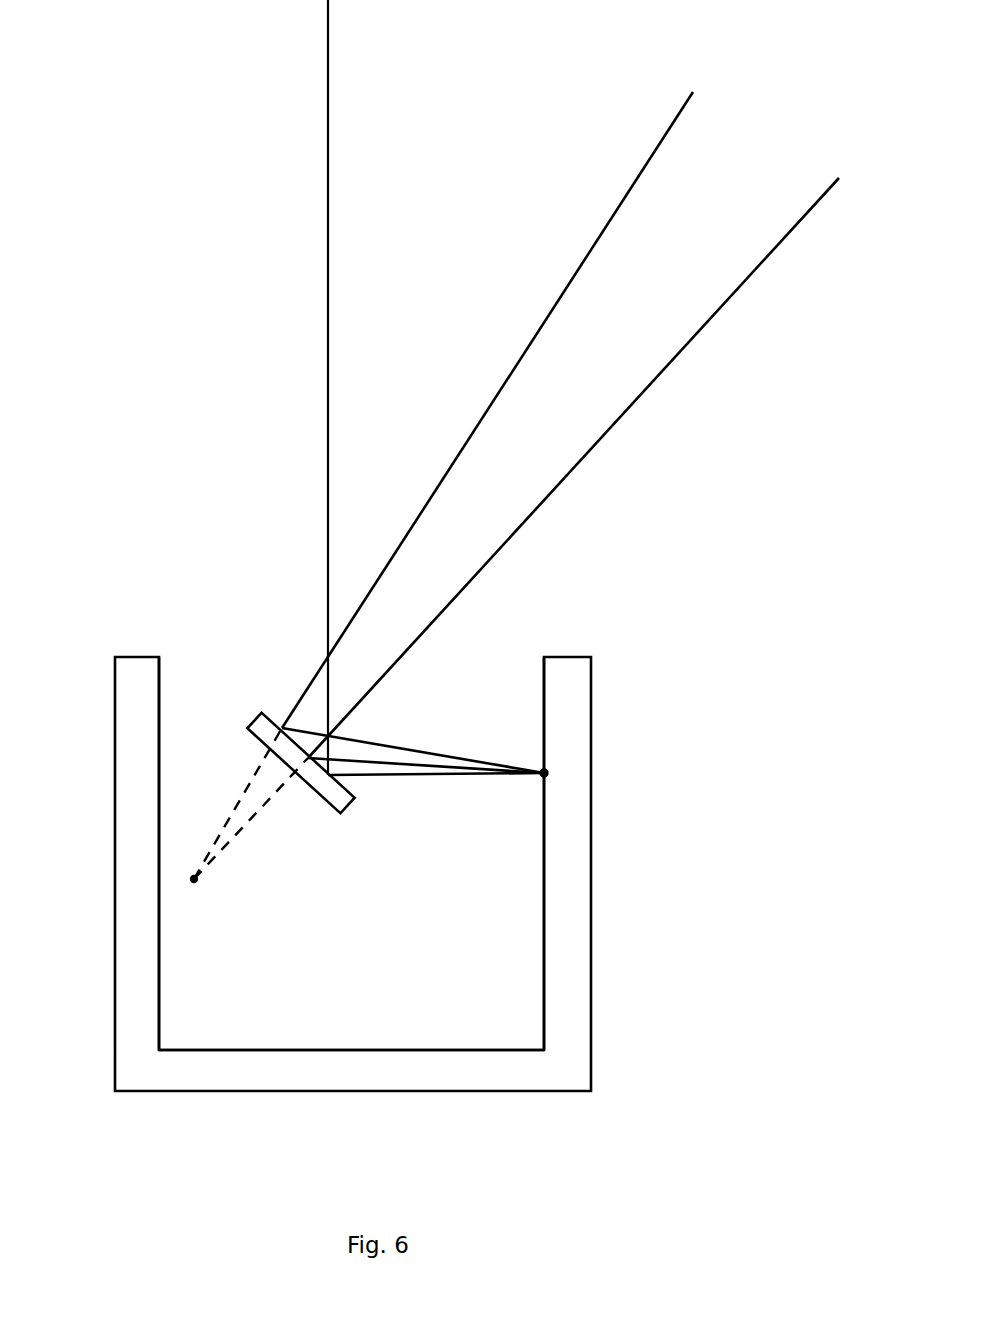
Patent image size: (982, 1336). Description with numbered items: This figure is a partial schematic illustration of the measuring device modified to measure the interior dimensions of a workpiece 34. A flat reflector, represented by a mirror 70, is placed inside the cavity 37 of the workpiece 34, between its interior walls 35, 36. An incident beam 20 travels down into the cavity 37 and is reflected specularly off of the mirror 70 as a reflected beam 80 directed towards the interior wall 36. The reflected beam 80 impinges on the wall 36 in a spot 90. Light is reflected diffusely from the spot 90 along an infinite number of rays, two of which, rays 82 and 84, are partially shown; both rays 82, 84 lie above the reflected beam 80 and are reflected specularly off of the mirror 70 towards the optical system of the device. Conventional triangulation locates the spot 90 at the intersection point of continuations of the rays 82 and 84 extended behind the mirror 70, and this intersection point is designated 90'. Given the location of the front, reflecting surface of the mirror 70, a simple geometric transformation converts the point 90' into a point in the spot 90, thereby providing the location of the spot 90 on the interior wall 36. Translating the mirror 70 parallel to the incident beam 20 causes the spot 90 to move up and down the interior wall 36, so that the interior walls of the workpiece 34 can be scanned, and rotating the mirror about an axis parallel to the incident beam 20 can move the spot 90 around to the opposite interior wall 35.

The incident beam 20 is at (336, 145).
The workpiece 34 is at (593, 978).
The interior wall 35 is at (158, 722).
The interior wall 36 is at (545, 943).
The cavity 37 is at (345, 1011).
The mirror 70 is at (252, 717).
The reflected beam 80 is at (447, 780).
The ray 82 is at (610, 428).
The ray 84 is at (547, 317).
The spot 90 is at (618, 807).
The intersection point 90' is at (250, 831).